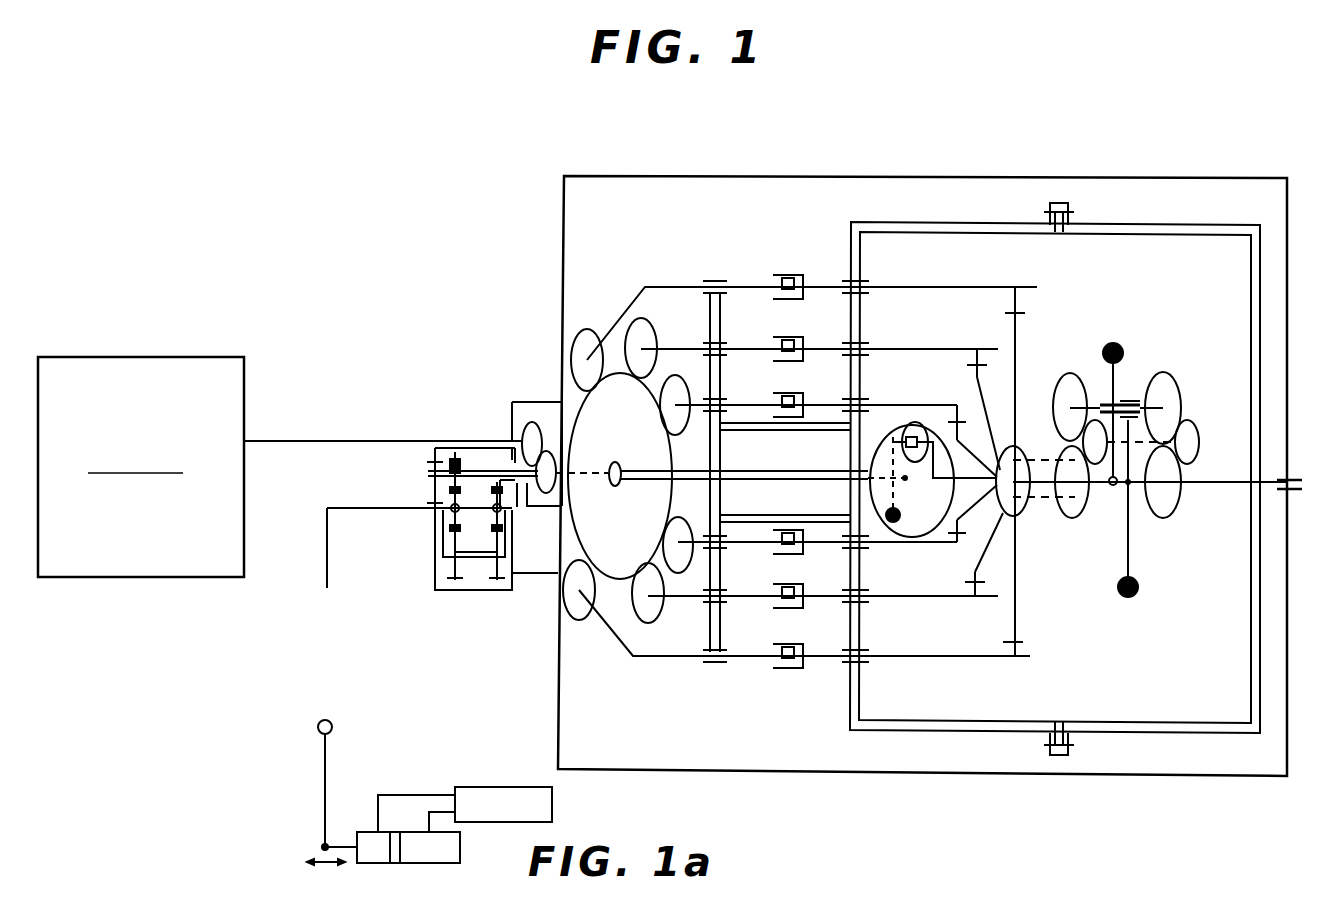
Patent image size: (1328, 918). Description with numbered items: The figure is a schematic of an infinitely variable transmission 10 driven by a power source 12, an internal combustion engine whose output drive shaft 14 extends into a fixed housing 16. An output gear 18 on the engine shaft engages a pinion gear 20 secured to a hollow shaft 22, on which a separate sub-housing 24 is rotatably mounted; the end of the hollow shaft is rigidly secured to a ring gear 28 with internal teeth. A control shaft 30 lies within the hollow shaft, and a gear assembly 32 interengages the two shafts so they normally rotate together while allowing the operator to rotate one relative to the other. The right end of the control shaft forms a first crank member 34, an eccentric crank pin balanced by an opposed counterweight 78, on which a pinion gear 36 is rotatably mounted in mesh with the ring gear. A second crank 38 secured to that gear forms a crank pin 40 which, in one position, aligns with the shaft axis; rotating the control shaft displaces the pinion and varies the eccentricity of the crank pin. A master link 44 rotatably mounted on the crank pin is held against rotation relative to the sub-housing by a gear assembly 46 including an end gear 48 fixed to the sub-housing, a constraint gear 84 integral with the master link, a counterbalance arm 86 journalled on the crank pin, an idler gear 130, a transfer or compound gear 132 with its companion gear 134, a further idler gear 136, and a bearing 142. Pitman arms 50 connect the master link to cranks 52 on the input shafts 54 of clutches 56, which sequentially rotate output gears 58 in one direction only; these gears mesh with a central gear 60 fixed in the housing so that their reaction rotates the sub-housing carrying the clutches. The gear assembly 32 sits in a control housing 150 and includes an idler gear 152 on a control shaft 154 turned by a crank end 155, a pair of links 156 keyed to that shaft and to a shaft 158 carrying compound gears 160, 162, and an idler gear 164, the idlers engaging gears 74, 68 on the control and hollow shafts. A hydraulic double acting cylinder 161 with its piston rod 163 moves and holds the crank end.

In FIG. 1, the infinitely variable transmission 10 is at (466, 348).
In FIG. 1, the power source 12 is at (207, 357).
In FIG. 1, the output drive shaft 14 is at (358, 441).
In FIG. 1, the fixed housing 16 is at (1287, 776).
In FIG. 1, the output gear 18 is at (536, 422).
In FIG. 1, the pinion gear 20 is at (556, 484).
In FIG. 1, the hollow shaft 22 is at (780, 456).
In FIG. 1, the sub-housing 24 is at (905, 222).
In FIG. 1, the ring gear 28 is at (906, 437).
In FIG. 1, the control shaft 30 is at (428, 471).
In FIG. 1, the gear assembly 32 is at (434, 603).
In FIG. 1, the first crank member 34 is at (873, 455).
In FIG. 1, the pinion gear 36 is at (921, 424).
In FIG. 1, the second crank 38 is at (959, 428).
In FIG. 1, the crank pin 40 is at (948, 480).
In FIG. 1, the master link 44 is at (1021, 510).
In FIG. 1, the gear assembly 46 is at (1143, 368).
In FIG. 1, the end gear 48 is at (1181, 513).
In FIG. 1, the pitman arms 50 is at (1016, 358).
In FIG. 1, the cranks 52 is at (975, 364).
In FIG. 1, the input shafts 54 is at (940, 658).
In FIG. 1, the clutches 56 is at (800, 275).
In FIG. 1, the output gear 58 is at (586, 356).
In FIG. 1, the central gear 60 is at (628, 436).
In FIG. 1, the gear 68 is at (512, 456).
In FIG. 1, the gear 74 is at (455, 455).
In FIG. 1, the counterweight 78 is at (893, 523).
In FIG. 1, the constraint gear 84 is at (1086, 506).
In FIG. 1, the counterbalance arm 86 is at (1119, 347).
In FIG. 1, the idler gear 130 is at (1196, 452).
In FIG. 1, the transfer or compound gear 132 is at (1178, 396).
In FIG. 1, the companion gear 134 is at (1067, 380).
In FIG. 1, the idler gear 136 is at (1082, 446).
In FIG. 1, the bearing 142 is at (1296, 478).
In FIG. 1, the control housing 150 is at (510, 600).
In FIG. 1, the idler gear 152 is at (433, 496).
In FIG. 1, the control shaft 154 is at (347, 510).
In FIG. 1a, the control shaft 154 is at (332, 727).
In FIG. 1, the crank end 155 is at (322, 578).
In FIG. 1a, the crank end 155 is at (325, 765).
In FIG. 1, the links 156 is at (443, 546).
In FIG. 1, the shaft 158 is at (495, 560).
In FIG. 1, the gear 160 is at (445, 577).
In FIG. 1a, the hydraulic double acting cylinder 161 is at (462, 855).
In FIG. 1, the gear 162 is at (515, 575).
In FIG. 1a, the piston rod 163 is at (337, 845).
In FIG. 1, the idler gear 164 is at (494, 524).